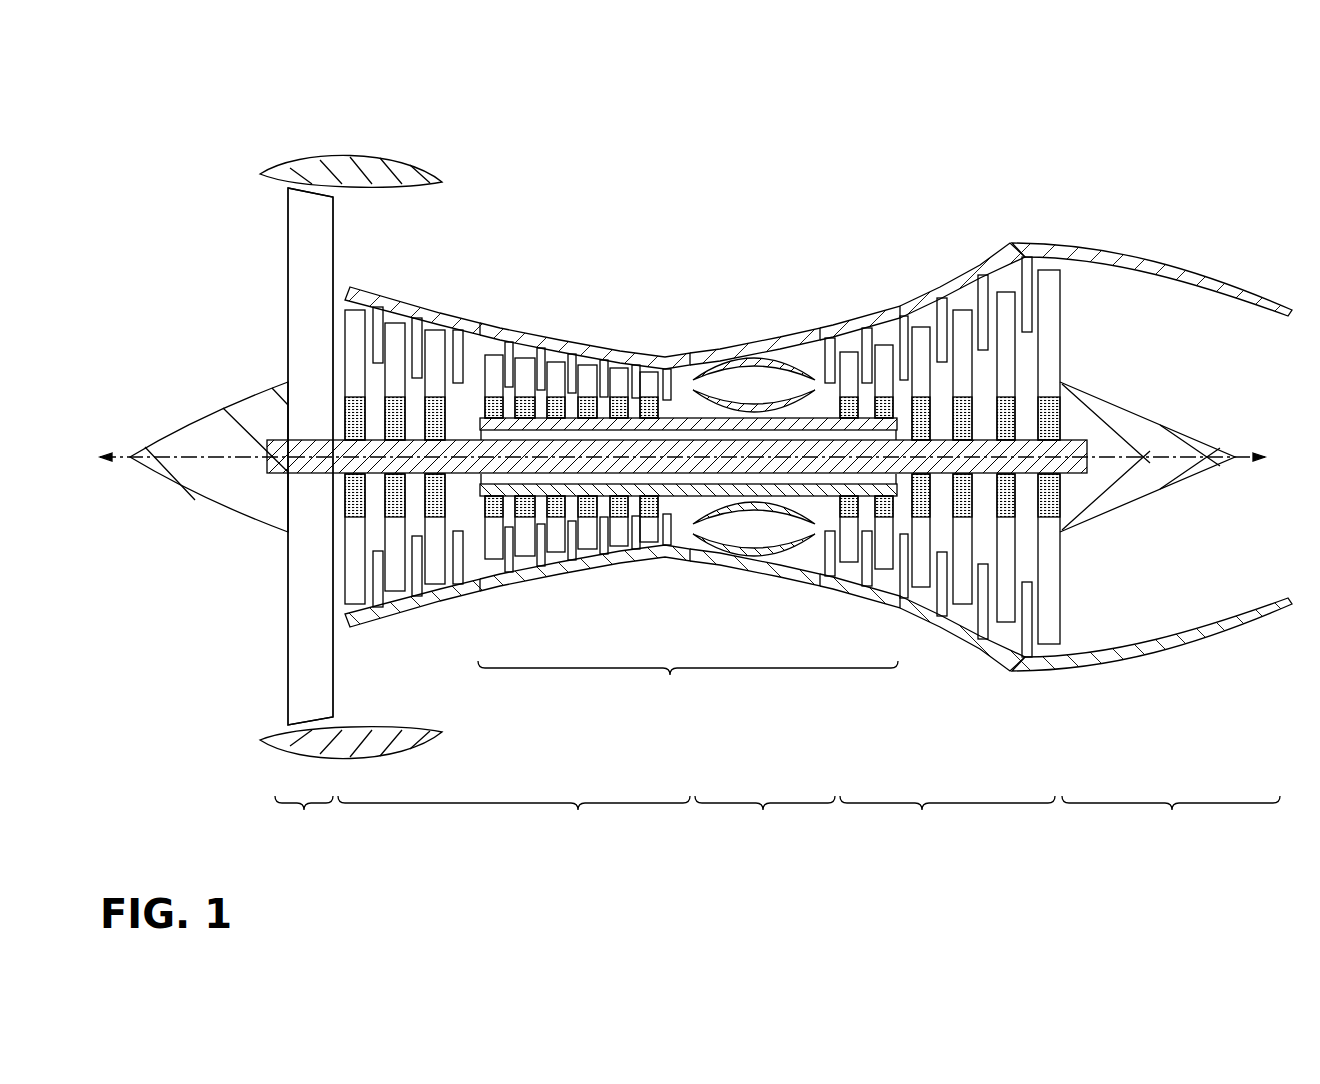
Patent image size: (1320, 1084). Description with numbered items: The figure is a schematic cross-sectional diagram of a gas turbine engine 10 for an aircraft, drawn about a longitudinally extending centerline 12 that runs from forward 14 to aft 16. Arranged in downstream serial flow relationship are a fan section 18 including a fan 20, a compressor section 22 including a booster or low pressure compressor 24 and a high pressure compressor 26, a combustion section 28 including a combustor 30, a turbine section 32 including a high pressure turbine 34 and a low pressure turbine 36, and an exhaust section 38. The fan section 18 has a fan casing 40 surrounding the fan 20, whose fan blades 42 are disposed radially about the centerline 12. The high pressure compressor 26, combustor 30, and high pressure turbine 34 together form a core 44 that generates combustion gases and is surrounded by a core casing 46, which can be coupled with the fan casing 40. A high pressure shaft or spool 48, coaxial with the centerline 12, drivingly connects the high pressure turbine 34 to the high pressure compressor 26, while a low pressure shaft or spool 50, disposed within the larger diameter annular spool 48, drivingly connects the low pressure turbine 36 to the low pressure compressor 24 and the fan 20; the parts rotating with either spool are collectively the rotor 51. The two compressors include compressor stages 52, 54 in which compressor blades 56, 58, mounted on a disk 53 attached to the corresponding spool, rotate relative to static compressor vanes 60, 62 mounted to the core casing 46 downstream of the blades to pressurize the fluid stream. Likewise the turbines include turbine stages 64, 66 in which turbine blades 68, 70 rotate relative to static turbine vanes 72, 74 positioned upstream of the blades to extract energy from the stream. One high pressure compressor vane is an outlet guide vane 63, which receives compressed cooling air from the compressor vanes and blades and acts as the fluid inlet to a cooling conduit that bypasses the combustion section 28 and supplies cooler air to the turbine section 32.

The gas turbine engine 10 is at (152, 91).
The centerline 12 is at (190, 455).
The forward 14 is at (668, 457).
The aft 16 is at (1278, 457).
The fan section 18 is at (304, 818).
The fan 20 is at (283, 250).
The compressor section 22 is at (514, 818).
The low pressure compressor 24 is at (486, 602).
The high pressure compressor 26 is at (625, 567).
The combustion section 28 is at (765, 818).
The combustor 30 is at (806, 358).
The turbine section 32 is at (947, 818).
The high pressure turbine 34 is at (823, 592).
The low pressure turbine 36 is at (948, 637).
The exhaust section 38 is at (1152, 541).
The fan casing 40 is at (352, 160).
The fan blades 42 is at (300, 668).
The core 44 is at (688, 683).
The core casing 46 is at (735, 345).
The high pressure shaft or spool 48 is at (690, 430).
The low pressure shaft or spool 50 is at (467, 437).
The rotor 51 is at (600, 440).
The compressor stages 52 is at (343, 284).
The disk 53 is at (525, 525).
The compressor stages 54 is at (497, 316).
The compressor blades 56 is at (357, 322).
The compressor blades 58 is at (497, 362).
The static compressor vanes 60 is at (380, 345).
The static compressor vanes 62 is at (545, 390).
The outlet guide vane 63 is at (663, 530).
The turbine stages 64 is at (853, 311).
The turbine stages 66 is at (983, 265).
The turbine blades 68 is at (882, 345).
The turbine blades 70 is at (1003, 308).
The static turbine vanes 72 is at (868, 340).
The static turbine vanes 74 is at (987, 300).